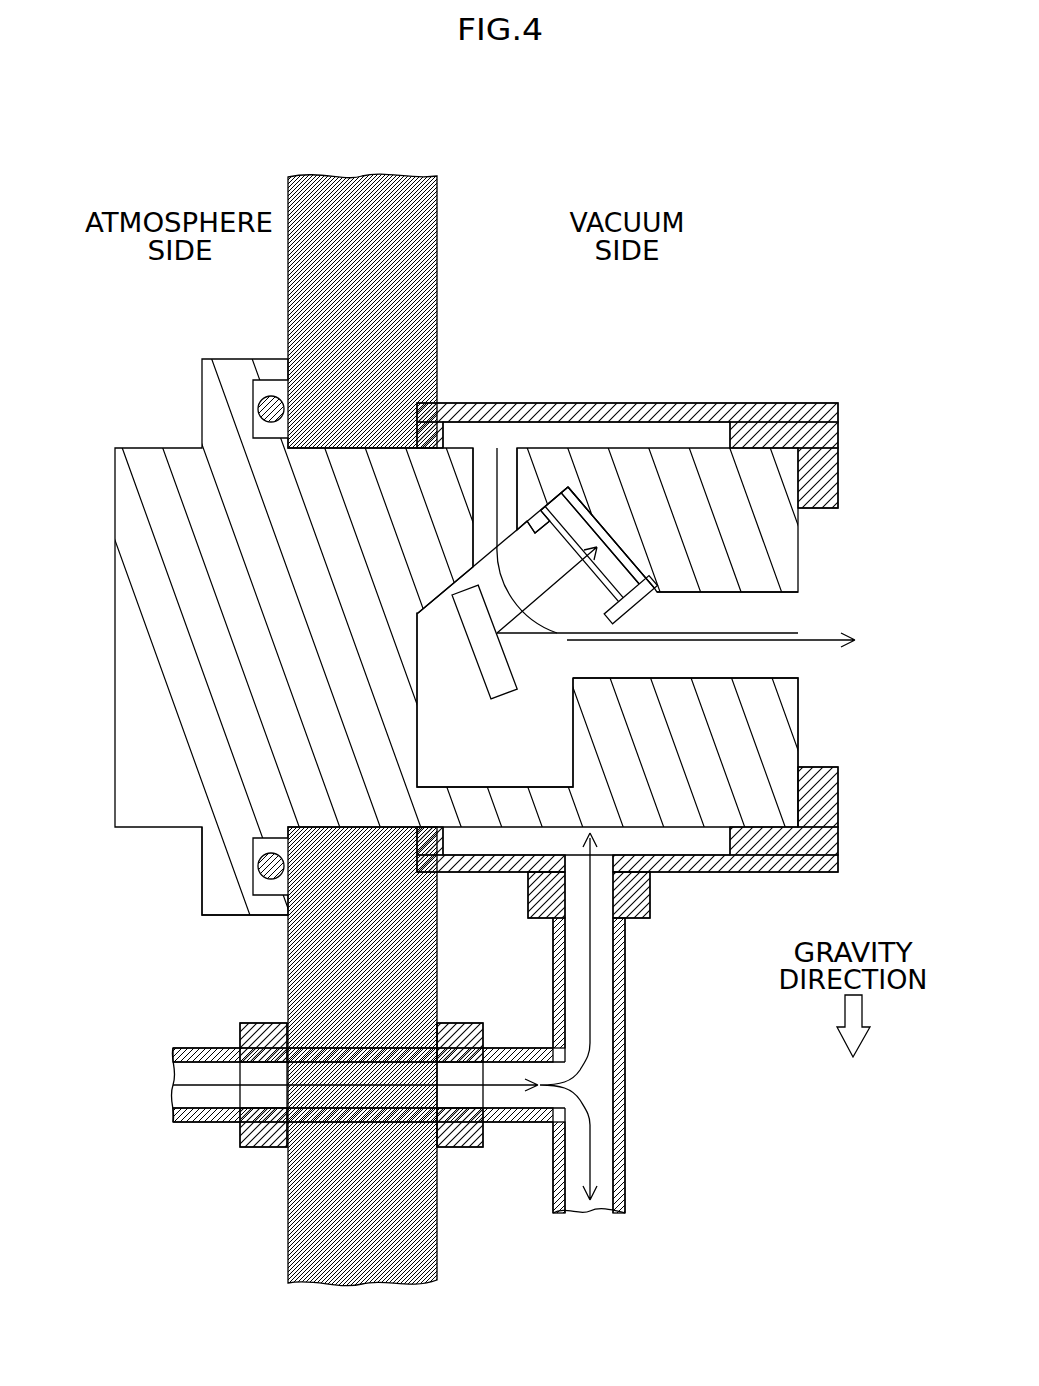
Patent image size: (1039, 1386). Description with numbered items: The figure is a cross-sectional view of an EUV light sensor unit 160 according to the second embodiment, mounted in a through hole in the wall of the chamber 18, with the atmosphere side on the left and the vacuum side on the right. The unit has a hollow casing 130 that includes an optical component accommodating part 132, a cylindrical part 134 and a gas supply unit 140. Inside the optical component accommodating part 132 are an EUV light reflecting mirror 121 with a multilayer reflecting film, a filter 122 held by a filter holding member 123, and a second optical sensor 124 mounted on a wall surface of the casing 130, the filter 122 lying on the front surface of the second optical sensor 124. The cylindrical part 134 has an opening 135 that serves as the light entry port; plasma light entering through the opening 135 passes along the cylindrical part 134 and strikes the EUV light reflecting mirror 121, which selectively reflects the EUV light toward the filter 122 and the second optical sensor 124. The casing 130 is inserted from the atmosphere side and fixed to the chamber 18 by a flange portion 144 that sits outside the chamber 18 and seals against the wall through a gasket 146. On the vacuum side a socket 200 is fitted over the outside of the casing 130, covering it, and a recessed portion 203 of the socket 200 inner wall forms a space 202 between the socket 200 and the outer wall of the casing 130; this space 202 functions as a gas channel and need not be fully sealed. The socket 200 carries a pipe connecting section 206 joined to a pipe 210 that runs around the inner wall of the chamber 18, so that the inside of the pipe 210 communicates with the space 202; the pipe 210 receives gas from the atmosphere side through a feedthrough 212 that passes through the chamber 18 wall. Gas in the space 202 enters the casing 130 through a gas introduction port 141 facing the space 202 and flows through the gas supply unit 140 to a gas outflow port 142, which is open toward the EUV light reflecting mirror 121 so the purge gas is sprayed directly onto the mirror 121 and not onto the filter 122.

The chamber 18 is at (428, 276).
The EUV light reflecting mirror 121 is at (492, 680).
The filter 122 is at (628, 592).
The filter holding member 123 is at (552, 483).
The second optical sensor 124 is at (592, 522).
The casing 130 is at (800, 717).
The optical component accommodating part 132 is at (567, 678).
The cylindrical part 134 is at (764, 598).
The opening 135 is at (794, 661).
The gas supply unit 140 is at (480, 502).
The gas introduction port 141 is at (482, 438).
The gas outflow port 142 is at (510, 540).
The flange portion 144 is at (202, 866).
The gasket 146 is at (258, 407).
The EUV light sensor unit 160 is at (128, 397).
The socket 200 is at (627, 434).
The space 202 is at (692, 432).
The recessed portion 203 is at (727, 846).
The pipe connecting section 206 is at (603, 874).
The pipe 210 is at (622, 1061).
The feedthrough 212 is at (388, 1070).